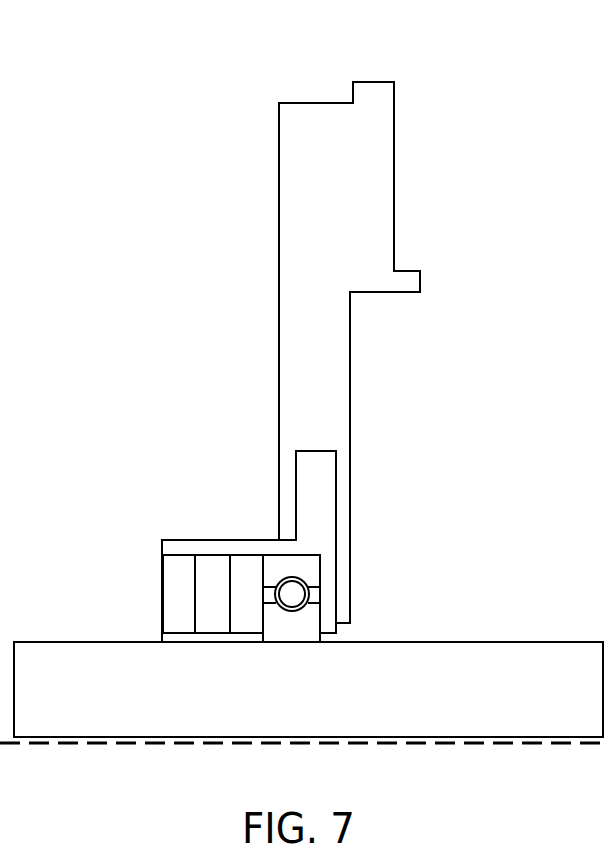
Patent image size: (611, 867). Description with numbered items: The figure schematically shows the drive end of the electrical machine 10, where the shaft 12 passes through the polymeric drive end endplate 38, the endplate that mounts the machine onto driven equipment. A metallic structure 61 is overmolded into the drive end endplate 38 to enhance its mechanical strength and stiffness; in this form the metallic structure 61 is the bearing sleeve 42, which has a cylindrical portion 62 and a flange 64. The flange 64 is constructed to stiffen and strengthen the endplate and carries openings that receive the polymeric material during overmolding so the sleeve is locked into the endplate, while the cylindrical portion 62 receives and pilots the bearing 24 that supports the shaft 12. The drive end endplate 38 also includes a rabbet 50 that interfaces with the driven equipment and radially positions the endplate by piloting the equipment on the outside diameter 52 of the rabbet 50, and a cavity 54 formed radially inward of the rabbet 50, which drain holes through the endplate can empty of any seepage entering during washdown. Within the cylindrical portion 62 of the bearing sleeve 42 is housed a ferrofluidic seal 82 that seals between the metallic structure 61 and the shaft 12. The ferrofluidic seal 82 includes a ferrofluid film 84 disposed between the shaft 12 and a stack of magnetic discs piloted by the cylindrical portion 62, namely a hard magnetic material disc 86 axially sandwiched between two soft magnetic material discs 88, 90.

The electrical machine 10 is at (122, 163).
The shaft 12 is at (40, 641).
The bearing 24 is at (340, 640).
The drive end endplate 38 is at (372, 82).
The bearing sleeve 42 is at (162, 541).
The rabbet 50 is at (420, 282).
The outside diameter 52 is at (410, 271).
The cavity 54 is at (426, 371).
The metallic structure 61 is at (152, 412).
The cylindrical portion 62 is at (188, 539).
The flange 64 is at (303, 451).
The ferrofluidic seal 82 is at (55, 578).
The ferrofluid film 84 is at (162, 641).
The hard magnetic material disc 86 is at (225, 598).
The soft magnetic material disc 88 is at (192, 598).
The soft magnetic material disc 90 is at (260, 598).